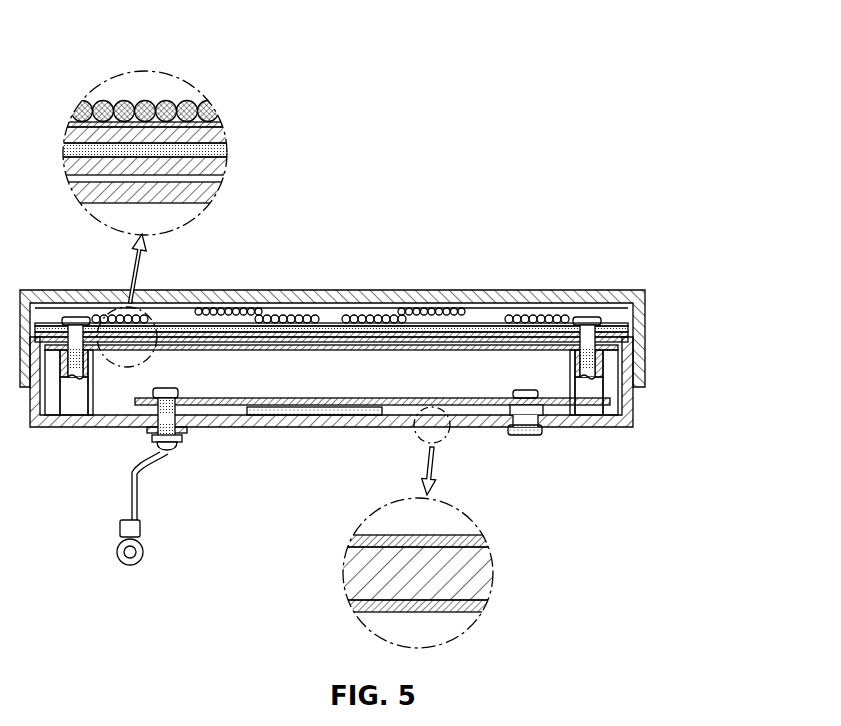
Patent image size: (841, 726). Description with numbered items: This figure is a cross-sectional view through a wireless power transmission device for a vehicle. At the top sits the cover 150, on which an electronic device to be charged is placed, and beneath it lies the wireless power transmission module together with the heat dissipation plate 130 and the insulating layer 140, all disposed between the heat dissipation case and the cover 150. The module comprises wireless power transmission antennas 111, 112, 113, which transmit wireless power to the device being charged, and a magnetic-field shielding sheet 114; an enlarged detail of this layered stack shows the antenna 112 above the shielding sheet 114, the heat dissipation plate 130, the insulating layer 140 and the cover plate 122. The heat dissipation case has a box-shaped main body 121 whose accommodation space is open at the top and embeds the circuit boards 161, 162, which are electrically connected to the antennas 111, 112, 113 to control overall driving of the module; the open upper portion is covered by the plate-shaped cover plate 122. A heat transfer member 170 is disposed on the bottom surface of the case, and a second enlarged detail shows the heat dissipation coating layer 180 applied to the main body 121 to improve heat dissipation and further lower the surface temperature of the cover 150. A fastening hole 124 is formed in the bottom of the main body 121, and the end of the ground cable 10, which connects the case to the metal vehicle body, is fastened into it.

The ground cable 10 is at (118, 484).
The wireless power transmission antenna 111 is at (430, 309).
The wireless power transmission antenna 112 is at (174, 103).
The wireless power transmission antenna 113 is at (528, 316).
The magnetic-field shielding sheet 114 is at (217, 122).
The main body 121 is at (640, 405).
The cover plate 122 is at (215, 167).
The fastening hole 124 is at (180, 435).
The heat dissipation plate 130 is at (217, 140).
The insulating layer 140 is at (217, 150).
The cover 150 is at (645, 342).
The circuit board 161 is at (207, 193).
The circuit board 162 is at (490, 420).
The heat transfer member 170 is at (300, 413).
The heat dissipation coating layer 180 is at (482, 607).